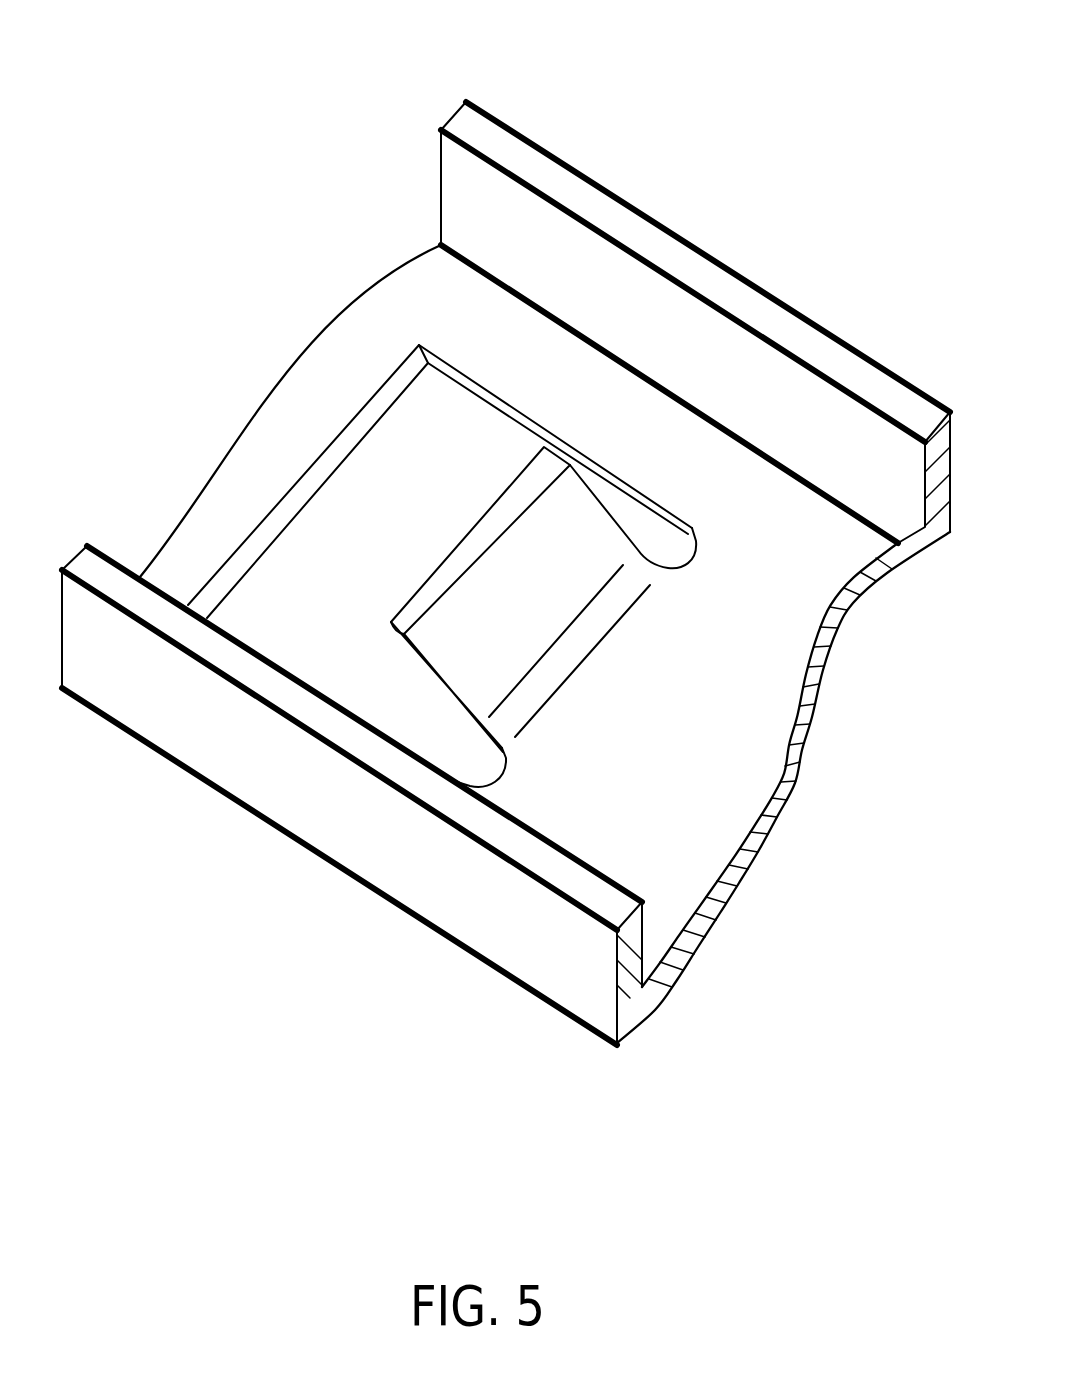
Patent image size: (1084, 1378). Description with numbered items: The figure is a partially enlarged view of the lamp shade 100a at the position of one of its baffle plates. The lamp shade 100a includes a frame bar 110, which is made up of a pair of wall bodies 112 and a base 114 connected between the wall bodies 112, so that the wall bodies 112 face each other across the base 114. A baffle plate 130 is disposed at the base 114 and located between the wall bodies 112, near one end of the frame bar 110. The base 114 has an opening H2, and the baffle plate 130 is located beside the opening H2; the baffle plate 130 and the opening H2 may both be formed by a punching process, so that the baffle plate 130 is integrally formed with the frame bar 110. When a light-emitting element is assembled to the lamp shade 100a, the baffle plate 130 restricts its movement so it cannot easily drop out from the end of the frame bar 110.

The frame bar 110 is at (168, 262).
The wall body 112 is at (482, 120).
The base 114 is at (385, 297).
The opening H2 is at (460, 410).
The baffle plate 130 is at (568, 527).
The lamp shade 100a is at (735, 1153).